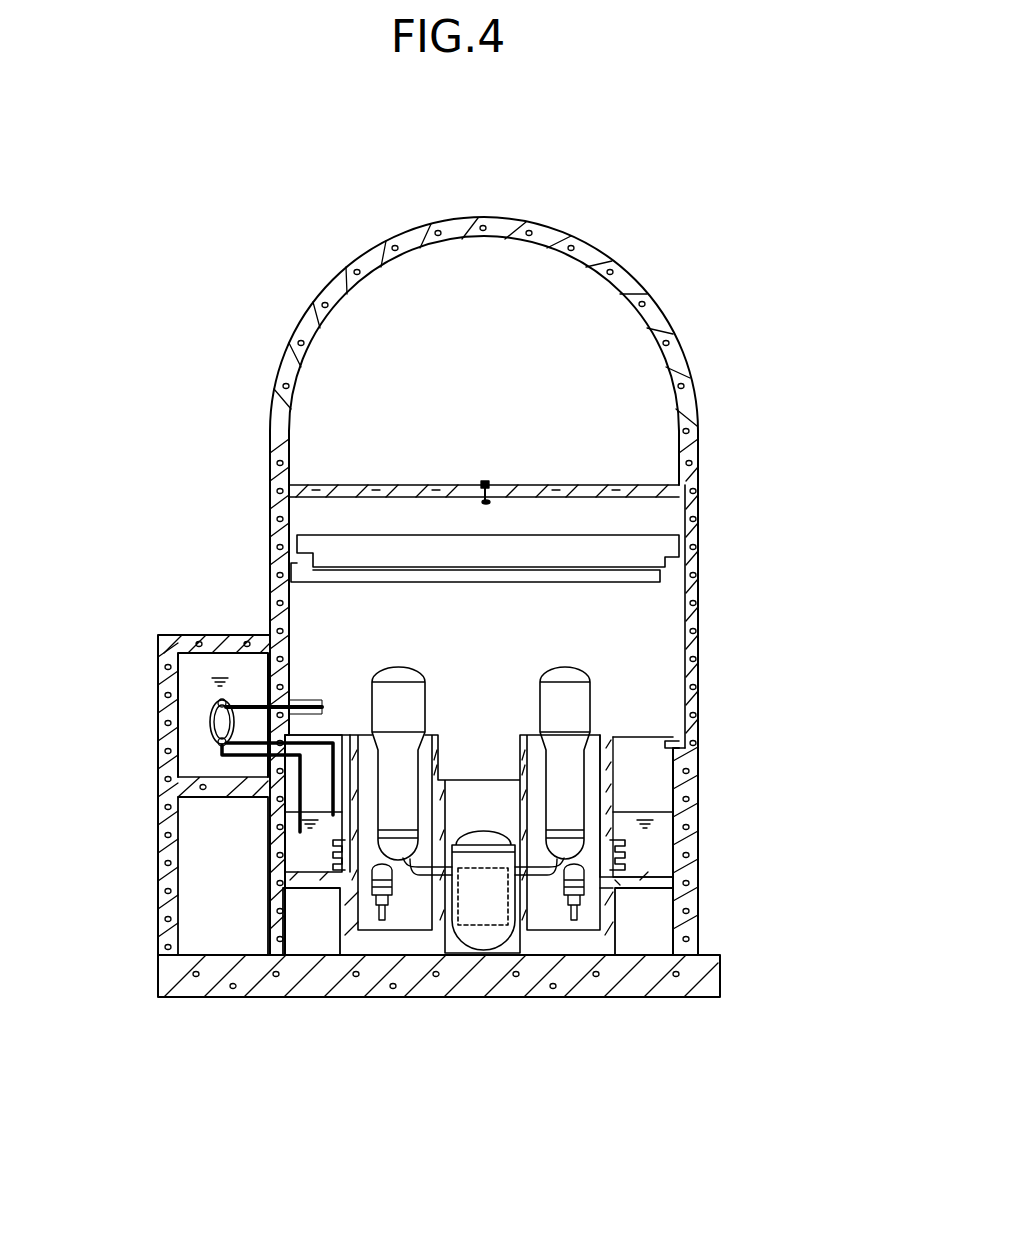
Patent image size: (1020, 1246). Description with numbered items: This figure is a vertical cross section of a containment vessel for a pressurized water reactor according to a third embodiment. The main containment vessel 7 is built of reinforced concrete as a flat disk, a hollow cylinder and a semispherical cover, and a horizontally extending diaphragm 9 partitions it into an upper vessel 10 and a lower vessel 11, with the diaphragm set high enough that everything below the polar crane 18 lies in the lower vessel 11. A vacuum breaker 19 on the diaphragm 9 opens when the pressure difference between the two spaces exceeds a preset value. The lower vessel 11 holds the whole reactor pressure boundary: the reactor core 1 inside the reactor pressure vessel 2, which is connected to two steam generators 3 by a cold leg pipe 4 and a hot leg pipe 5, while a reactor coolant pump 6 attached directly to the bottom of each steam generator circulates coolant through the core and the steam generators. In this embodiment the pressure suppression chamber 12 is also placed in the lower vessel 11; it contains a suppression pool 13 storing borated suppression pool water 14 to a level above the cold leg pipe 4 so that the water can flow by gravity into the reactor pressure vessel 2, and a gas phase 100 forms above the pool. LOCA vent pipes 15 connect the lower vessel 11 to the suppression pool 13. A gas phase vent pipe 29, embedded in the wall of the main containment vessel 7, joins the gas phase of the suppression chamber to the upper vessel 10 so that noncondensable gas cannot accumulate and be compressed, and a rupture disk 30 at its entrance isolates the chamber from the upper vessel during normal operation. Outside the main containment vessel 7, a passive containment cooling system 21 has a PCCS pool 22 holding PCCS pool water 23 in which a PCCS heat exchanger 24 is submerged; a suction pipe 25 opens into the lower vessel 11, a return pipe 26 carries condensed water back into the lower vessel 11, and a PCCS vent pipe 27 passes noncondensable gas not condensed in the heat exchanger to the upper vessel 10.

The reactor core 1 is at (490, 932).
The reactor pressure vessel 2 is at (477, 945).
The steam generator 3 is at (398, 672).
The cold leg pipe 4 is at (548, 875).
The hot leg pipe 5 is at (425, 880).
The reactor coolant pump 6 is at (383, 918).
The main containment vessel 7 is at (698, 437).
The diaphragm 9 is at (531, 487).
The upper vessel 10 is at (632, 333).
The lower vessel 11 is at (657, 699).
The pressure suppression chamber 12 is at (660, 780).
The suppression pool 13 is at (665, 833).
The suppression pool water 14 is at (662, 848).
The LOCA vent pipe 15 is at (610, 835).
The polar crane 18 is at (630, 548).
The vacuum breaker 19 is at (483, 480).
The passive containment cooling system 21 is at (212, 700).
The PCCS pool 22 is at (176, 700).
The PCCS pool water 23 is at (212, 722).
The PCCS heat exchanger 24 is at (250, 745).
The suction pipe 25 is at (310, 705).
The return pipe 26 is at (258, 758).
The PCCS vent pipe 27 is at (330, 780).
The gas phase vent pipe 29 is at (685, 652).
The rupture disk 30 is at (673, 748).
The gas phase 100 is at (662, 802).